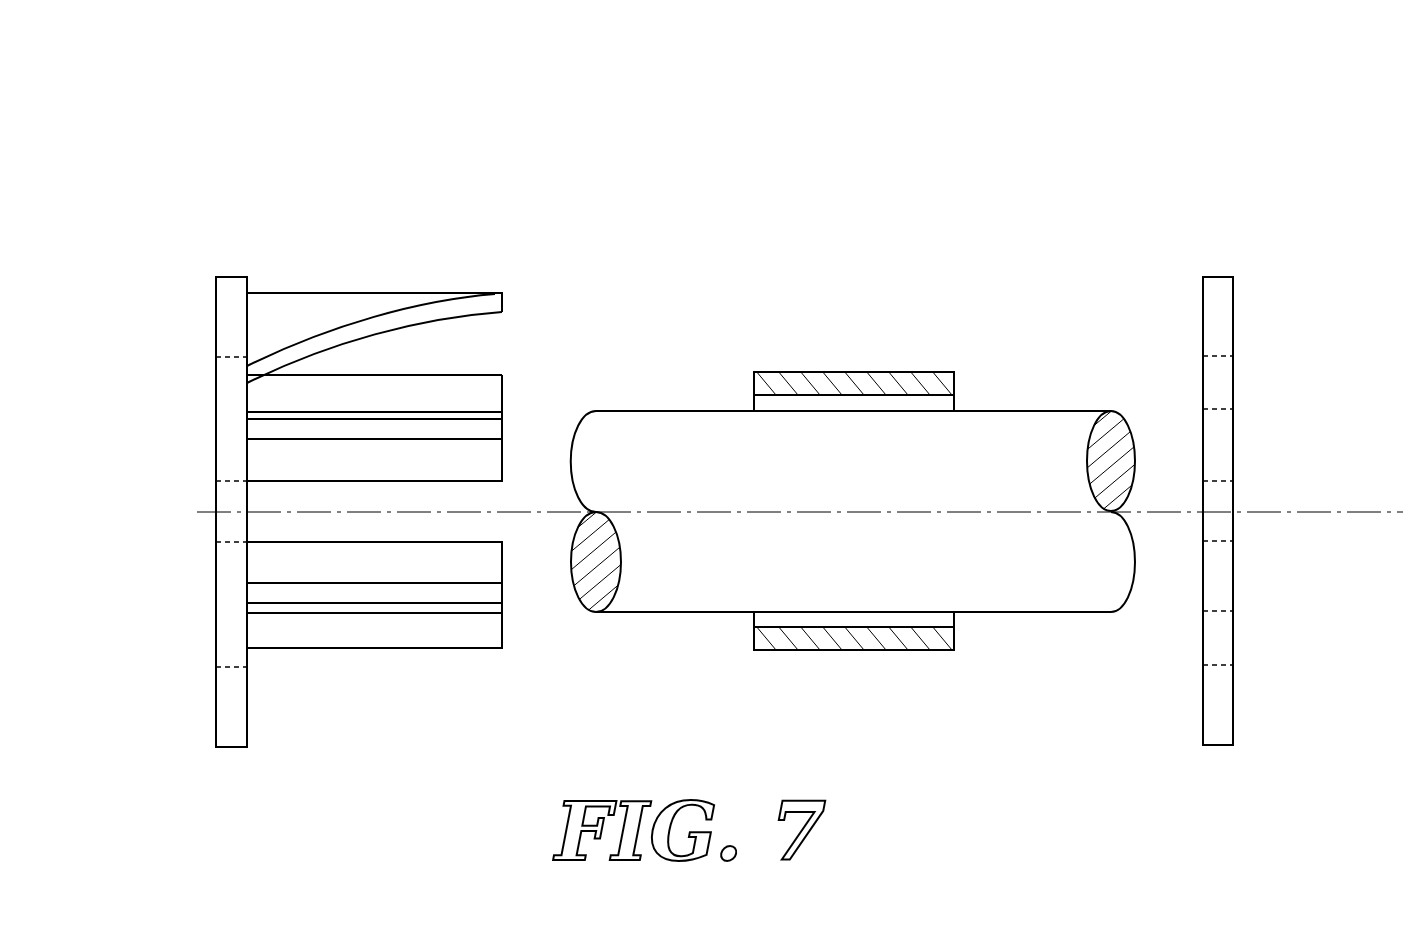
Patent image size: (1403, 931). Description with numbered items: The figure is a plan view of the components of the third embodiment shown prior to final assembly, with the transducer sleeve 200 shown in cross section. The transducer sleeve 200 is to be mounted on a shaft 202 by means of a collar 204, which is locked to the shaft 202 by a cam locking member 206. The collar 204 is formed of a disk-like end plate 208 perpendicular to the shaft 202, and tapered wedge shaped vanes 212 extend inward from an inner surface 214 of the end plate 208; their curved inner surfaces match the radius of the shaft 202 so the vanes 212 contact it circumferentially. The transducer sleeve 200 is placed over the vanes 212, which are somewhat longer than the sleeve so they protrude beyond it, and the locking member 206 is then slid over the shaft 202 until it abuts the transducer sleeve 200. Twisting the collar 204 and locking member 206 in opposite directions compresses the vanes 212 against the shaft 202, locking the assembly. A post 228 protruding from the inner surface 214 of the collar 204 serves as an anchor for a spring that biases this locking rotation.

The transducer sleeve 200 is at (853, 407).
The shaft 202 is at (833, 426).
The collar 204 is at (442, 429).
The cam locking member 206 is at (1111, 407).
The end plate 208 is at (226, 452).
The vanes 212 is at (483, 510).
The inner surface 214 is at (301, 753).
The post 228 is at (392, 261).